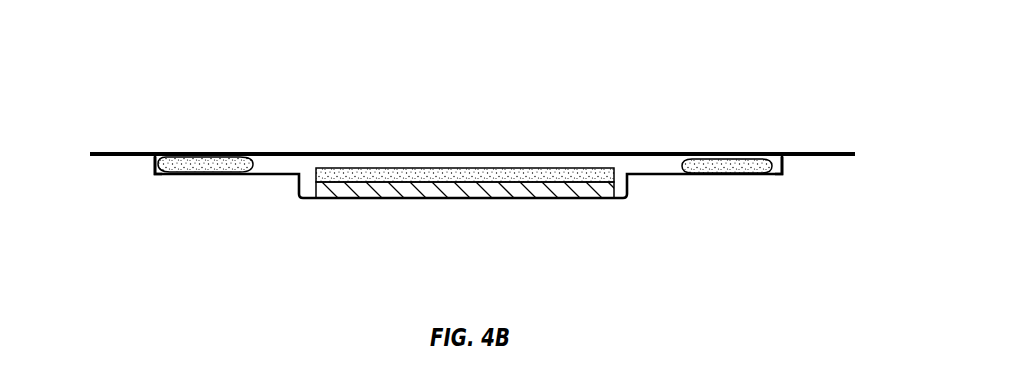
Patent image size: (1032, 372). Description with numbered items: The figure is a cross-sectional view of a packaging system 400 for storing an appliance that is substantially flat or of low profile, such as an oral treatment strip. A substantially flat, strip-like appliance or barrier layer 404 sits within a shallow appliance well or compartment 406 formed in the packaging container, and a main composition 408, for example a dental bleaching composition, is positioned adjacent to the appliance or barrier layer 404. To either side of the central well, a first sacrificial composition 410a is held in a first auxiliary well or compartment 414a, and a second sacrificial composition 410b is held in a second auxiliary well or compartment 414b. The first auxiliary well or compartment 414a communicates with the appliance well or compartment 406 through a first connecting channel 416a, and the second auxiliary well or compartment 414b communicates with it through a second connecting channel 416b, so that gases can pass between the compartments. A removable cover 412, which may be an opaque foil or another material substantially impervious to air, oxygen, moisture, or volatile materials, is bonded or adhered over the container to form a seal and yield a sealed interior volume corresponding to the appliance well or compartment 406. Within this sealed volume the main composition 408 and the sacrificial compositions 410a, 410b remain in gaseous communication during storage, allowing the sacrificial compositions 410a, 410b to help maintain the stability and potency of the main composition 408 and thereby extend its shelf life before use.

The packaging system 400 is at (654, 57).
The appliance or barrier layer 404 is at (392, 188).
The appliance well or compartment 406 is at (301, 184).
The main composition 408 is at (515, 172).
The first sacrificial composition 410a is at (206, 166).
The second sacrificial composition 410b is at (712, 166).
The removable cover 412 is at (390, 160).
The first auxiliary well or compartment 414a is at (153, 172).
The second auxiliary well or compartment 414b is at (784, 176).
The first connecting channel 416a is at (287, 163).
The second connecting channel 416b is at (643, 162).